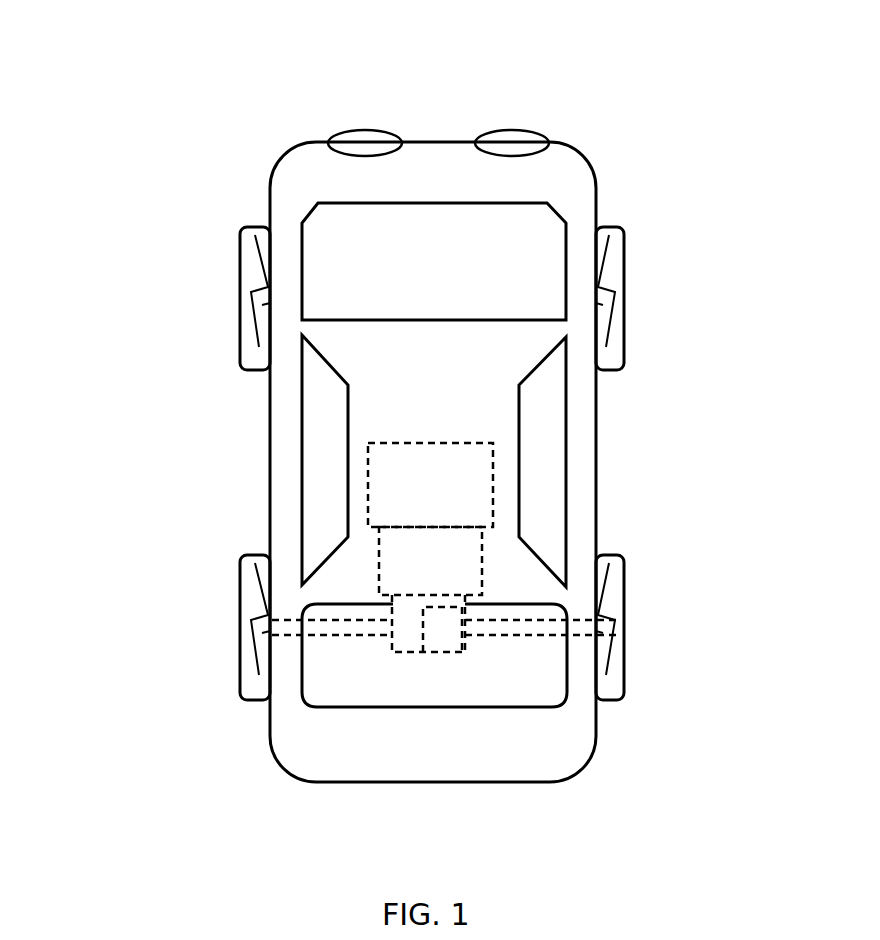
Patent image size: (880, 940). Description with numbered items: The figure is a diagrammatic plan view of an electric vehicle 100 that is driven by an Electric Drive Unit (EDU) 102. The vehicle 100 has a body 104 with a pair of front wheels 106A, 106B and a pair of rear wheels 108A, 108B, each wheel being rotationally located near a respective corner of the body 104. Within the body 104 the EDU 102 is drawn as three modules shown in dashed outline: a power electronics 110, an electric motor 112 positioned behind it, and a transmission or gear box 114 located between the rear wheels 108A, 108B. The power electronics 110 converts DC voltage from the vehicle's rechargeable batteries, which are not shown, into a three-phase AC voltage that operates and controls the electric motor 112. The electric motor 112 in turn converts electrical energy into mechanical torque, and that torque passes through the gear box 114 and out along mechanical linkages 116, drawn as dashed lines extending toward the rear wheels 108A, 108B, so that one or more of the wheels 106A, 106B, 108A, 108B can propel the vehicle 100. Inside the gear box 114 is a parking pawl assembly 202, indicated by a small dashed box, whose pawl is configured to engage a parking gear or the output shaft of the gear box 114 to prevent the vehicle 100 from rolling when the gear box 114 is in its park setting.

The electric vehicle 100 is at (630, 135).
The Electric Drive Unit (EDU) 102 is at (501, 558).
The body 104 is at (581, 392).
The front wheel 106A is at (252, 258).
The front wheel 106B is at (614, 274).
The rear wheel 108A is at (246, 597).
The rear wheel 108B is at (615, 618).
The power electronics 110 is at (405, 492).
The electric motor 112 is at (393, 563).
The gear box 114 is at (417, 628).
The mechanical linkages 116 is at (510, 627).
The parking pawl assembly 202 is at (442, 633).